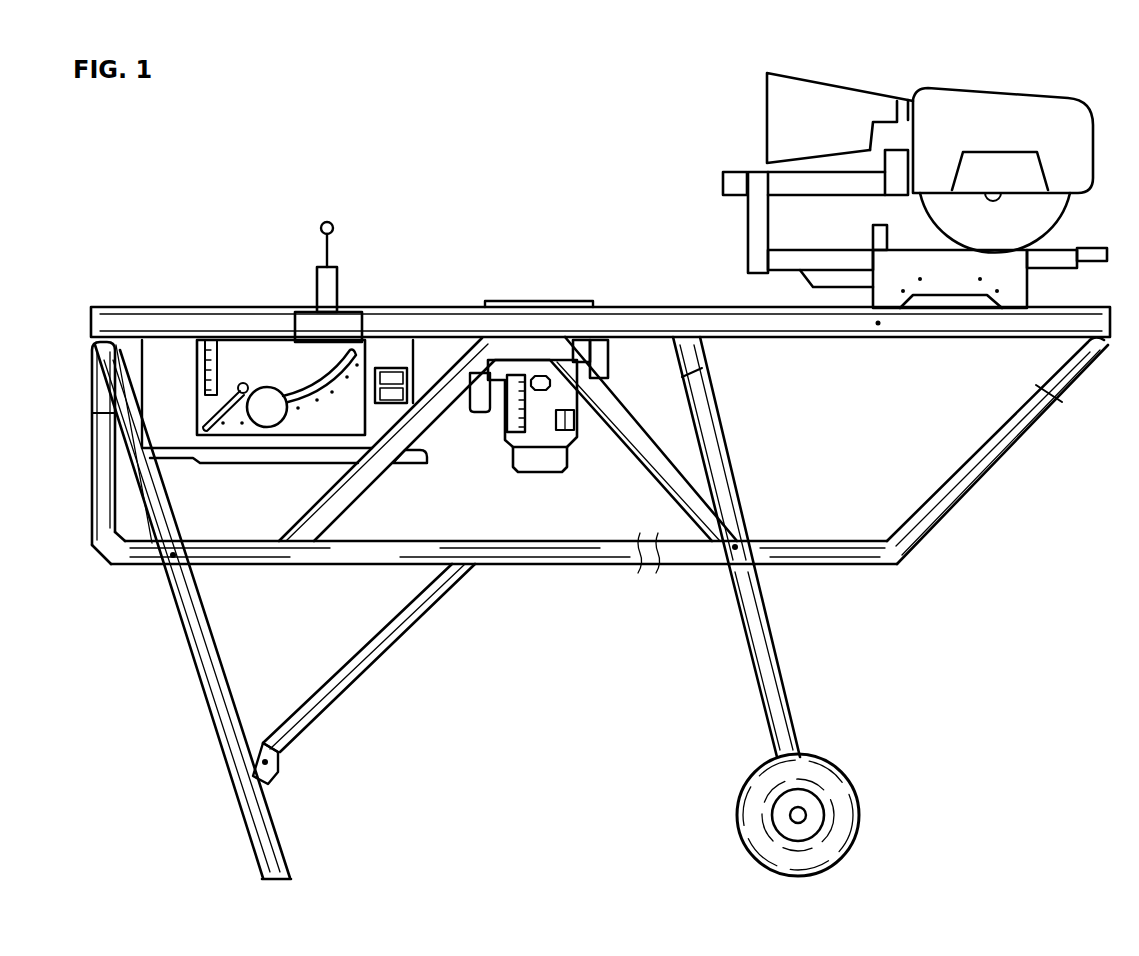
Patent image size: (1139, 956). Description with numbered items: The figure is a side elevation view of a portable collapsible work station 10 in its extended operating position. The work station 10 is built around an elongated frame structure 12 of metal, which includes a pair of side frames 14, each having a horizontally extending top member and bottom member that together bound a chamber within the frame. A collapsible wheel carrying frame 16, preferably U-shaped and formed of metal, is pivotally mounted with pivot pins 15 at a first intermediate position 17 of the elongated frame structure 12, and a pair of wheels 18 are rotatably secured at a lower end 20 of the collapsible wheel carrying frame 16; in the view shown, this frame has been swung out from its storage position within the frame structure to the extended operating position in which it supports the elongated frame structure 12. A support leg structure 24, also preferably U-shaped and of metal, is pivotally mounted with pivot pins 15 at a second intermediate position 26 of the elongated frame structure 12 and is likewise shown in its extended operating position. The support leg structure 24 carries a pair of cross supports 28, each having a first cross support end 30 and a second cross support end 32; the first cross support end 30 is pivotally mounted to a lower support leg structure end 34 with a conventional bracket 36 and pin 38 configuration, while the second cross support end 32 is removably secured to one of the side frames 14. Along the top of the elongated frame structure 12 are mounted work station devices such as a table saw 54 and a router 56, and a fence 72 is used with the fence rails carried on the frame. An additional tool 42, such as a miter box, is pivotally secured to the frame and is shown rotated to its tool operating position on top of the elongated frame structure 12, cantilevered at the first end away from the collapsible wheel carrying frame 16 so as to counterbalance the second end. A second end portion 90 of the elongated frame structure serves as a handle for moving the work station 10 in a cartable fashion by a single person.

The portable collapsible work station 10 is at (465, 193).
The elongated frame structure 12 is at (947, 497).
The side frames 14 is at (656, 566).
The pivot pins 15 is at (738, 545).
The collapsible wheel carrying frame 16 is at (760, 638).
The first intermediate position 17 is at (773, 551).
The wheels 18 is at (840, 815).
The lower end 20 is at (780, 732).
The support leg structure 24 is at (260, 840).
The second intermediate position 26 is at (118, 556).
The cross supports 28 is at (370, 658).
The first cross support end 30 is at (280, 758).
The second cross support end 32 is at (456, 567).
The lower support leg structure end 34 is at (248, 793).
The bracket 36 is at (252, 746).
The pin 38 is at (262, 762).
The tool 42 is at (945, 112).
The table saw 54 is at (167, 348).
The router 56 is at (603, 360).
The fence 72 is at (348, 320).
The second end portion 90 is at (103, 480).